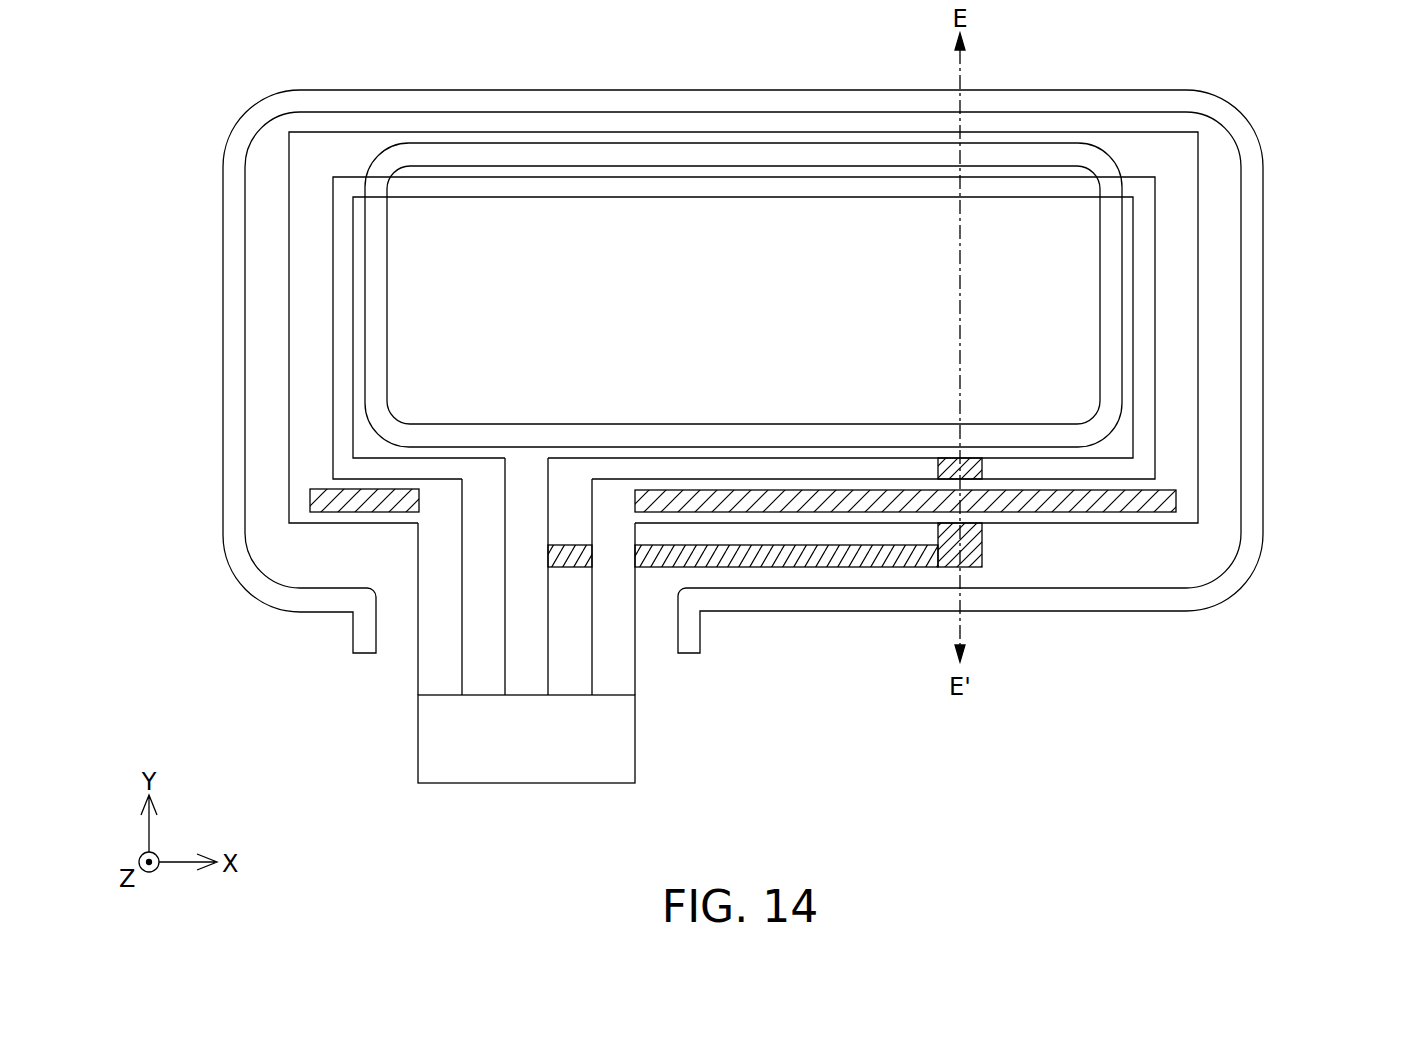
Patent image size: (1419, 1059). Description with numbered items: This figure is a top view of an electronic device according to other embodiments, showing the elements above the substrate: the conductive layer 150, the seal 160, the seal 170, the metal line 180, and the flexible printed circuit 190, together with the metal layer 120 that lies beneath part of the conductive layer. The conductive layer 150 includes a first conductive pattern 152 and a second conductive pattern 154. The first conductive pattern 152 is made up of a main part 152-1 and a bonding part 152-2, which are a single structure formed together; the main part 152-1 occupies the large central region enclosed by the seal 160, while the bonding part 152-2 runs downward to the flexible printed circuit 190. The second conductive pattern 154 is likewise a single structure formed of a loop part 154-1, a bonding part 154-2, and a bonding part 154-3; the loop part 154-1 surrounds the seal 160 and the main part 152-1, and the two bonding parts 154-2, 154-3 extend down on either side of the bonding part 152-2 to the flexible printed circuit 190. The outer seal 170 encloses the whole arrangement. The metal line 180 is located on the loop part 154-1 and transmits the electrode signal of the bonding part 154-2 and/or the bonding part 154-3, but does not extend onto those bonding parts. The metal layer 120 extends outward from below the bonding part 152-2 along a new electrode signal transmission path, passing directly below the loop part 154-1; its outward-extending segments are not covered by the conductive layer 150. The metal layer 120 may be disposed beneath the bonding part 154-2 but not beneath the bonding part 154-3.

The metal layer 120 is at (818, 560).
The conductive layer 150 is at (851, 471).
The first conductive pattern 152 is at (768, 503).
The main part 152-1 is at (780, 323).
The bonding part 152-2 is at (515, 650).
The second conductive pattern 154 is at (851, 471).
The loop part 154-1 is at (1183, 378).
The bonding part 154-2 is at (425, 545).
The bonding part 154-3 is at (618, 676).
The seal 160 is at (1108, 290).
The seal 170 is at (1254, 219).
The metal line 180 is at (1143, 503).
The flexible printed circuit 190 is at (550, 755).